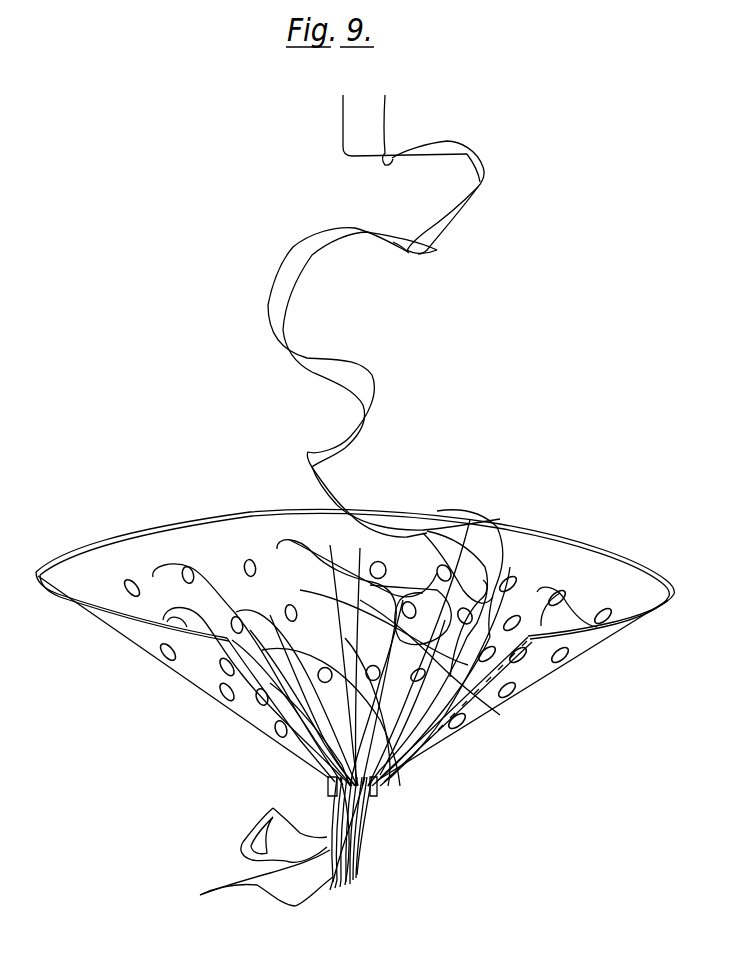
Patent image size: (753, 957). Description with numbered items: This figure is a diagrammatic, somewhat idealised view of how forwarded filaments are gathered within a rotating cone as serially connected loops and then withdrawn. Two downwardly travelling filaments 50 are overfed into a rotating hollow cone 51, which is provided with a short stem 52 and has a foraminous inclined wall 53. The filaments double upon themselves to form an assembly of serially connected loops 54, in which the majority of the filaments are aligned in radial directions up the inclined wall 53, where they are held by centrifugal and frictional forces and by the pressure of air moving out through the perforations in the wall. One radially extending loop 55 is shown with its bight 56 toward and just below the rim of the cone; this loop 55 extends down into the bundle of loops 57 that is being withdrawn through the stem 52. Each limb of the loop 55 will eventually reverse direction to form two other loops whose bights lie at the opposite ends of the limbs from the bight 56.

The downwardly travelling filaments 50 is at (470, 217).
The rotating hollow cone 51 is at (548, 682).
The short stem 52 is at (378, 788).
The foraminous inclined wall 53 is at (228, 532).
The assembly of serially connected loops 54 is at (270, 683).
The radially extending loop 55 is at (403, 600).
The bight 56 is at (480, 593).
The bundle of loops 57 is at (370, 833).